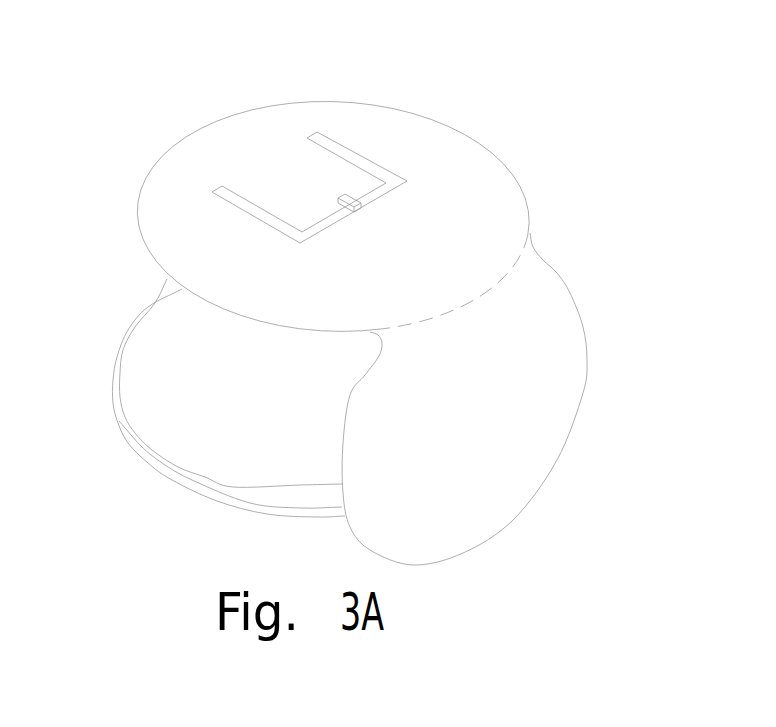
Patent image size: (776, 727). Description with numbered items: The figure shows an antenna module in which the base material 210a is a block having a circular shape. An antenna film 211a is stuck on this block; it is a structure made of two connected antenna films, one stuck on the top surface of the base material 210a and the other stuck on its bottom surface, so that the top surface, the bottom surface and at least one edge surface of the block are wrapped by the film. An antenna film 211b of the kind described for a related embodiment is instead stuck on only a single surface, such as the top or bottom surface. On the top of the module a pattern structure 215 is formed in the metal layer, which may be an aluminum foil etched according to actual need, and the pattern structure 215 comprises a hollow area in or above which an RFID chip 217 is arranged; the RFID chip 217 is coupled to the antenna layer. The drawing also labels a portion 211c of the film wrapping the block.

The base material 210a is at (150, 324).
The antenna film 211a is at (250, 97).
The antenna film 211b is at (490, 173).
The extension flange of substrate 211c is at (570, 398).
The pattern structure 215 is at (301, 199).
The RFID chip 217 is at (359, 211).